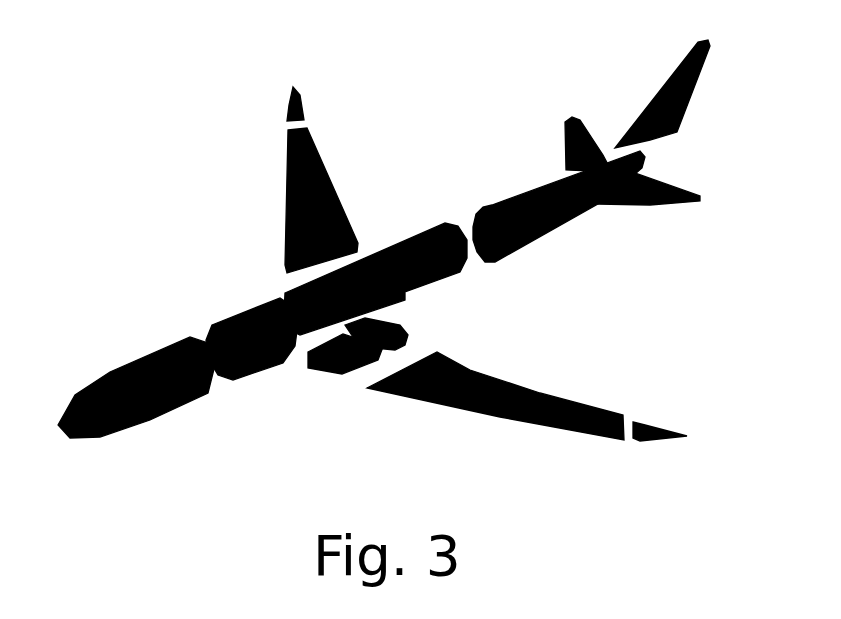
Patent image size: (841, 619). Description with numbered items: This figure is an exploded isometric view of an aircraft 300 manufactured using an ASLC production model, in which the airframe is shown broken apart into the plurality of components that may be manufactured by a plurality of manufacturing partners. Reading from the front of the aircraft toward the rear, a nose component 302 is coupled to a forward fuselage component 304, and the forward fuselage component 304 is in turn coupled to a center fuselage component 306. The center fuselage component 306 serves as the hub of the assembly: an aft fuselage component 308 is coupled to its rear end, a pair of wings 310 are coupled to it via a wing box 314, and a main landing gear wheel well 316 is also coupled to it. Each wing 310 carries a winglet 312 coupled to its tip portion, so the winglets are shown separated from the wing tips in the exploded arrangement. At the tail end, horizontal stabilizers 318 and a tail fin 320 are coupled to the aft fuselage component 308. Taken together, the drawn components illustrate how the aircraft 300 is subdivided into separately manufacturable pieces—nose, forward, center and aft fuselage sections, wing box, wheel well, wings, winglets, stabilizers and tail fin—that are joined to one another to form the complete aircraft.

The aircraft 300 is at (128, 72).
The nose component 302 is at (127, 360).
The forward fuselage component 304 is at (230, 315).
The center fuselage component 306 is at (395, 243).
The aft fuselage component 308 is at (545, 180).
The wings 310 is at (290, 195).
The winglet 312 is at (290, 112).
The wing box 314 is at (340, 372).
The main landing gear wheel well 316 is at (400, 332).
The horizontal stabilizers 318 is at (570, 120).
The tail fin 320 is at (660, 97).